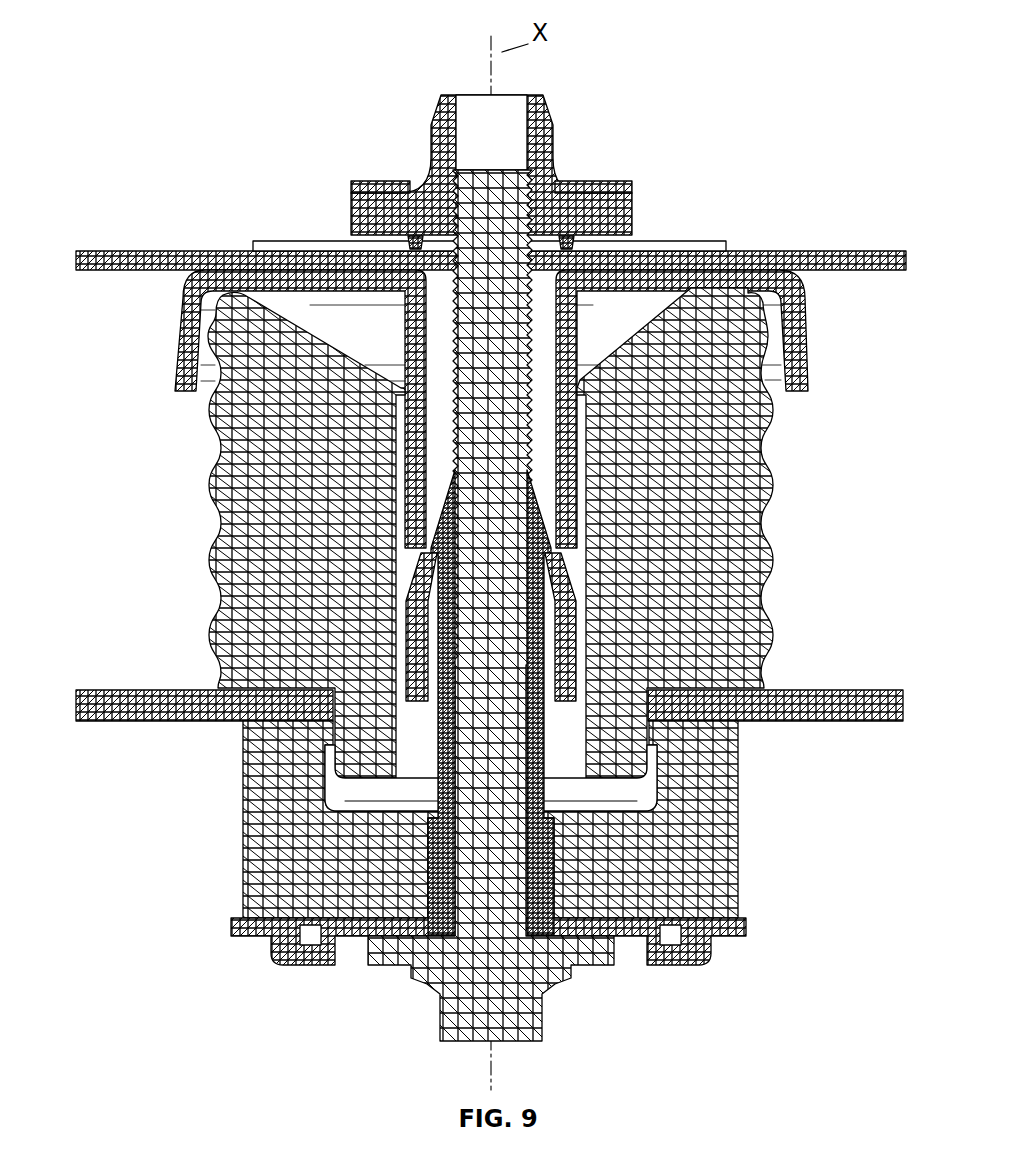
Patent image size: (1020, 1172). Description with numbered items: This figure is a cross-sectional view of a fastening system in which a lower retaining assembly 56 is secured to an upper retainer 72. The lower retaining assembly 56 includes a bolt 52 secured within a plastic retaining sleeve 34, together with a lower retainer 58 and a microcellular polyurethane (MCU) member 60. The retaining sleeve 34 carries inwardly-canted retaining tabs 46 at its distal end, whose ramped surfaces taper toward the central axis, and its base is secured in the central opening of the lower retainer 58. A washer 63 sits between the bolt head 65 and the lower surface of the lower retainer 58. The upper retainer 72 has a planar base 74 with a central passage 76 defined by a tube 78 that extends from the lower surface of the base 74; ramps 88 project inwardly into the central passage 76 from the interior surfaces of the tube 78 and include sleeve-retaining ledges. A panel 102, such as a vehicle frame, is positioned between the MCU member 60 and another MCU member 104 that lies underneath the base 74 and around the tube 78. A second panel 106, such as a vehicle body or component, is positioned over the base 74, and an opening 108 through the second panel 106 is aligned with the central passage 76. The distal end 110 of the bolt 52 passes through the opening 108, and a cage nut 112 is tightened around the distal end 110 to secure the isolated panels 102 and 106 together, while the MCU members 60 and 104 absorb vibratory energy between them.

The retaining sleeve 34 is at (567, 612).
The inwardly-canted retaining tabs 46 is at (483, 674).
The bolt 52 is at (488, 546).
The lower retaining assembly 56 is at (447, 957).
The lower retainer 58 is at (270, 938).
The microcellular polyurethane (MCU) member 60 is at (232, 797).
The washer 63 is at (483, 546).
The bolt head 65 is at (491, 546).
The upper retainer 72 is at (523, 377).
The planar base 74 is at (491, 377).
The central passage 76 is at (433, 300).
The tube 78 is at (558, 306).
The ramps 88 is at (398, 585).
The panel 102 is at (122, 681).
The MCU member 104 is at (203, 483).
The second panel 106 is at (122, 244).
The opening 108 is at (572, 241).
The distal end 110 is at (466, 160).
The cage nut 112 is at (543, 100).